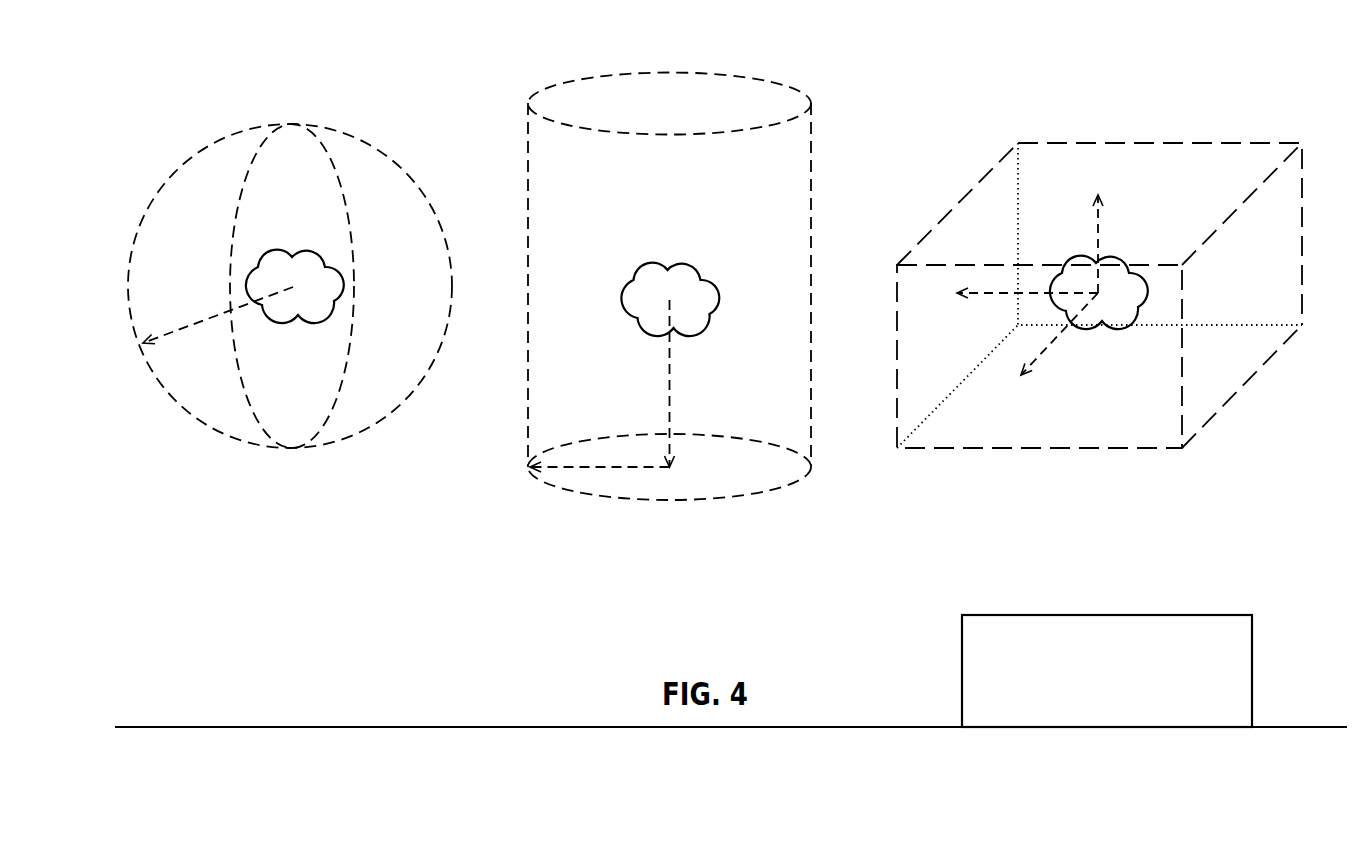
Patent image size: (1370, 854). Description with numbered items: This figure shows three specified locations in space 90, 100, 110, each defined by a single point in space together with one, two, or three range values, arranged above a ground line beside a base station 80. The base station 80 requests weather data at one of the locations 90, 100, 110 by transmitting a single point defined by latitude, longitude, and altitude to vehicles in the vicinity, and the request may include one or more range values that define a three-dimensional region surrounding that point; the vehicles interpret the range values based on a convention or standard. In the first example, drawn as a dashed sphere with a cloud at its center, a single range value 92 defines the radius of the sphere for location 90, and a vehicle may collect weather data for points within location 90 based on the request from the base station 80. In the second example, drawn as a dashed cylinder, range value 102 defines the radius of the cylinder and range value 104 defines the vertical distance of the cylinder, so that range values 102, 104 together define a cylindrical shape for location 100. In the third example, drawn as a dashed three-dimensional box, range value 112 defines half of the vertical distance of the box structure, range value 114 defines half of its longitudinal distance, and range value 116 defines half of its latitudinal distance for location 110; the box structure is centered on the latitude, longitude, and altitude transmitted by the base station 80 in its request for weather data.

The base station 80 is at (1095, 694).
The specified location in space 90 is at (200, 493).
The range value 92 is at (207, 318).
The specified location in space 100 is at (600, 562).
The range value 102 is at (602, 472).
The range value 104 is at (672, 393).
The specified location in space 110 is at (1220, 482).
The range value 112 is at (1100, 245).
The range value 114 is at (987, 296).
The range value 116 is at (1046, 348).